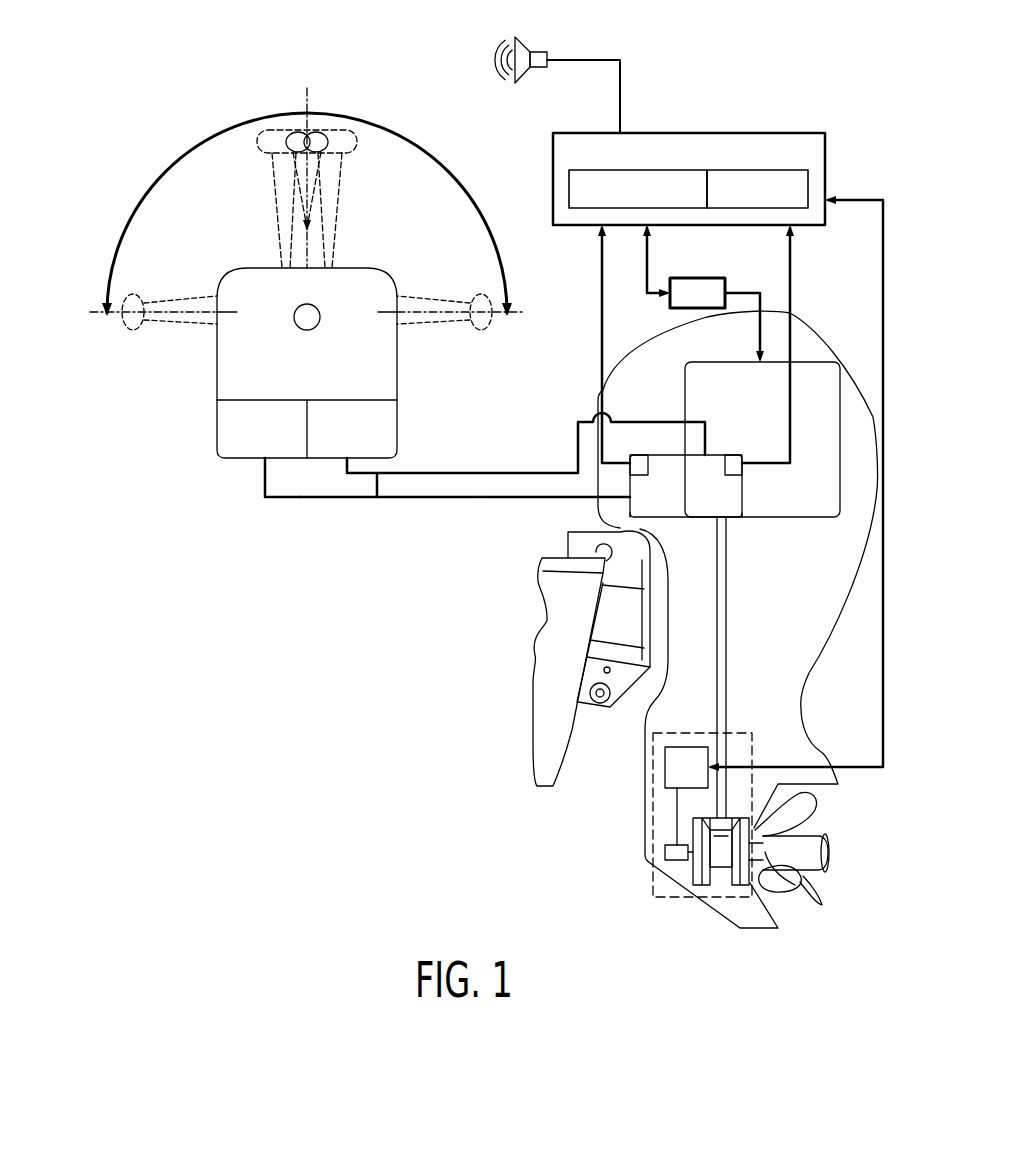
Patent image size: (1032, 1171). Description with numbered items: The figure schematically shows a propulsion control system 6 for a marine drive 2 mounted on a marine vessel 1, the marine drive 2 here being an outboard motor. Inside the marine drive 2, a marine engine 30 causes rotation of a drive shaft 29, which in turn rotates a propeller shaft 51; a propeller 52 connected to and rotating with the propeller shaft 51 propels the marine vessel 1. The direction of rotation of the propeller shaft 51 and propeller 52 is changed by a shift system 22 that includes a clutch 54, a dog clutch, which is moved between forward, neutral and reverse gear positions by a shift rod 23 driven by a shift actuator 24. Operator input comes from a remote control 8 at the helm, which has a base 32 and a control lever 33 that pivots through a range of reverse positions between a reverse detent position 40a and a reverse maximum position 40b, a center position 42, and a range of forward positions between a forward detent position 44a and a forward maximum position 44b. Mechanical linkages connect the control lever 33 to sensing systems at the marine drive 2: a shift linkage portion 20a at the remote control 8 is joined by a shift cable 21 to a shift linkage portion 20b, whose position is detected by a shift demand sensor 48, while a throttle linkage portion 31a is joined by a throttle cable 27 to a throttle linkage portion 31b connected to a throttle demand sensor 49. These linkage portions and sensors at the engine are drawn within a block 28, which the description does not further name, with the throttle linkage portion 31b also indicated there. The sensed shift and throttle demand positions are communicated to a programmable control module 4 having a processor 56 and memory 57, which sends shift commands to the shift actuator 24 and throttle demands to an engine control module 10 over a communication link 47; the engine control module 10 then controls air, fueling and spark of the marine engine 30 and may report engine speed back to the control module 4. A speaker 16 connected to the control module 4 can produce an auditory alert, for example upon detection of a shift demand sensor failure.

The marine vessel 1 is at (568, 733).
The marine drive 2 is at (869, 147).
The control module 4 is at (690, 133).
The propulsion control system 6 is at (412, 558).
The remote control 8 is at (140, 162).
The engine control module (ECM) 10 is at (698, 278).
The speaker 16 is at (521, 37).
The shift linkage portion 20a is at (250, 462).
The shift linkage portion 20b is at (643, 497).
The shift cable 21 is at (337, 498).
The shift system 22 is at (673, 897).
The shift rod 23 is at (677, 807).
The shift actuator 24 is at (665, 767).
The throttle cable 27 is at (377, 500).
The linkage block 28 is at (727, 487).
The drive shaft 29 is at (720, 600).
The marine engine 30 is at (742, 362).
The throttle linkage portion 31a is at (397, 425).
The throttle linkage portion 31b is at (723, 497).
The base 32 is at (217, 380).
The control lever 33 is at (293, 157).
The reverse detent position 40a is at (363, 121).
The reverse maximum position 40b is at (460, 289).
The center position 42 is at (293, 128).
The forward detent position 44a is at (255, 138).
The forward maximum position 44b is at (127, 335).
The communication link 47 is at (648, 252).
The shift demand sensor 48 is at (648, 464).
The throttle demand sensor 49 is at (732, 457).
The propeller shaft 51 is at (783, 870).
The propeller 52 is at (808, 810).
The clutch 54 is at (718, 867).
The processor 56 is at (570, 188).
The memory 57 is at (808, 186).